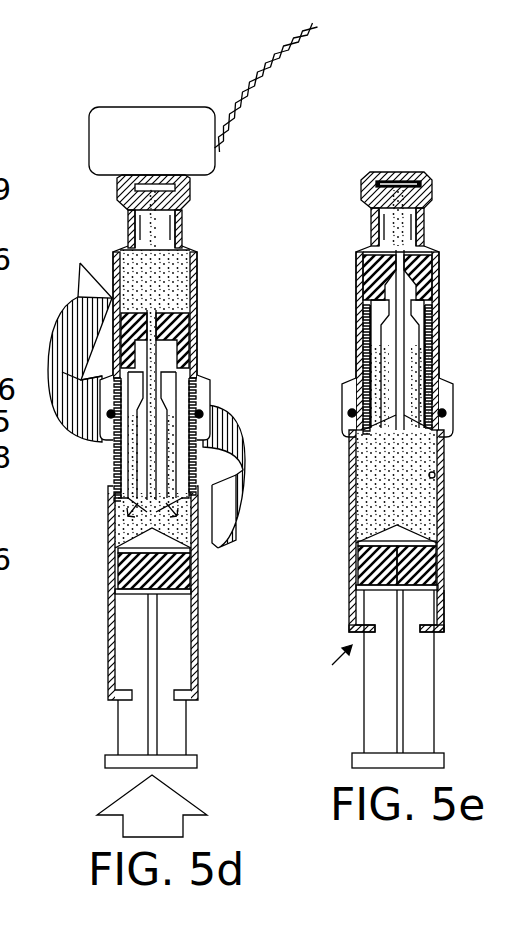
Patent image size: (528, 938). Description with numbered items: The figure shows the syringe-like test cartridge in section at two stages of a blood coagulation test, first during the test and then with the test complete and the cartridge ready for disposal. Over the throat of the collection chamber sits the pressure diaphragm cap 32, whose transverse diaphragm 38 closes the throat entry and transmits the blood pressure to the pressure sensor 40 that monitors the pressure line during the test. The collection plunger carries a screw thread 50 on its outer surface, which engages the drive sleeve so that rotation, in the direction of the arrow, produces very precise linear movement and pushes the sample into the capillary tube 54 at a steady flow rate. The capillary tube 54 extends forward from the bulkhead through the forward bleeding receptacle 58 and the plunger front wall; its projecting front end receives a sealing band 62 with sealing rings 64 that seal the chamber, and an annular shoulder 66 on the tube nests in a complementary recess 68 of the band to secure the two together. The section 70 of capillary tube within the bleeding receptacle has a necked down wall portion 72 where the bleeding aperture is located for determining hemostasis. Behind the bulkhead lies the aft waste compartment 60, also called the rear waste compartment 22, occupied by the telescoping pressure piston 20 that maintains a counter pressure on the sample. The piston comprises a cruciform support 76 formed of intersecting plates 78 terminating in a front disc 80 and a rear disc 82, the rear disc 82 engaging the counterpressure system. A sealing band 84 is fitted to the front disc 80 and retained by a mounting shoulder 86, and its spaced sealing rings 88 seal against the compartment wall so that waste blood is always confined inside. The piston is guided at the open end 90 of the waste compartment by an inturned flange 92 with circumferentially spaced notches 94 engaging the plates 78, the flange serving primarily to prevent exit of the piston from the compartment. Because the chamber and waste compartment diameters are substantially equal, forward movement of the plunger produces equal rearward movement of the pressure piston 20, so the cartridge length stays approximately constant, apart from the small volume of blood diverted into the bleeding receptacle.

In FIG. 5D, the pressure piston 20 is at (187, 730).
In FIG. 5E, the pressure piston 20 is at (443, 660).
In FIG. 5D, the rear waste compartment 22 is at (188, 532).
In FIG. 5E, the rear waste compartment 22 is at (438, 478).
In FIG. 5D, the pressure diaphragm cap 32 is at (192, 190).
In FIG. 5E, the pressure diaphragm cap 32 is at (433, 188).
In FIG. 5E, the transverse diaphragm 38 is at (400, 172).
In FIG. 5D, the pressure sensor 40 is at (96, 136).
In FIG. 5D, the screw thread 50 is at (104, 485).
In FIG. 5E, the capillary tube 54 is at (405, 313).
In FIG. 5D, the forward bleeding receptacle 58 is at (172, 390).
In FIG. 5D, the aft waste compartment 60 is at (122, 530).
In FIG. 5D, the sealing band 62 is at (186, 322).
In FIG. 5D, the sealing rings 64 is at (172, 356).
In FIG. 5E, the sealing rings 64 is at (363, 292).
In FIG. 5E, the annular shoulder 66 is at (426, 256).
In FIG. 5E, the recess 68 is at (422, 265).
In FIG. 5E, the section of capillary tube 70 is at (405, 318).
In FIG. 5E, the necked down wall portion 72 is at (389, 333).
In FIG. 5D, the cruciform support 76 is at (118, 730).
In FIG. 5E, the cruciform support 76 is at (426, 702).
In FIG. 5E, the intersecting plates 78 is at (376, 728).
In FIG. 5E, the front disc 80 is at (361, 600).
In FIG. 5E, the rear disc 82 is at (352, 762).
In FIG. 5E, the sealing band 84 is at (426, 552).
In FIG. 5E, the mounting shoulder 86 is at (436, 572).
In FIG. 5E, the sealing rings 88 is at (364, 548).
In FIG. 5E, the open end 90 is at (325, 671).
In FIG. 5E, the inturned flange 92 is at (444, 612).
In FIG. 5E, the notches 94 is at (442, 628).